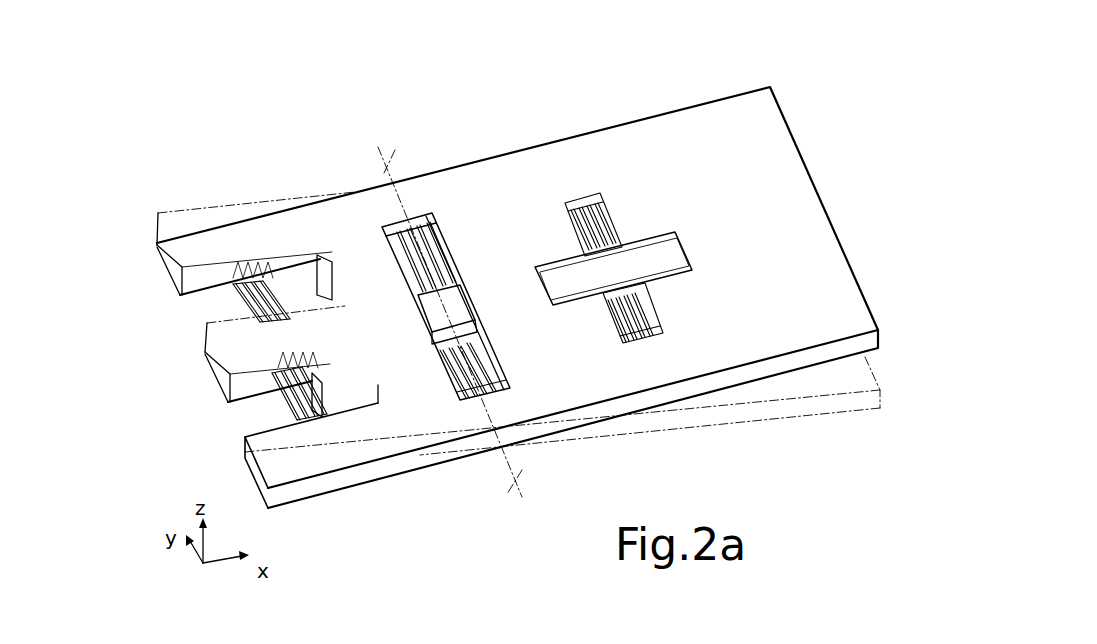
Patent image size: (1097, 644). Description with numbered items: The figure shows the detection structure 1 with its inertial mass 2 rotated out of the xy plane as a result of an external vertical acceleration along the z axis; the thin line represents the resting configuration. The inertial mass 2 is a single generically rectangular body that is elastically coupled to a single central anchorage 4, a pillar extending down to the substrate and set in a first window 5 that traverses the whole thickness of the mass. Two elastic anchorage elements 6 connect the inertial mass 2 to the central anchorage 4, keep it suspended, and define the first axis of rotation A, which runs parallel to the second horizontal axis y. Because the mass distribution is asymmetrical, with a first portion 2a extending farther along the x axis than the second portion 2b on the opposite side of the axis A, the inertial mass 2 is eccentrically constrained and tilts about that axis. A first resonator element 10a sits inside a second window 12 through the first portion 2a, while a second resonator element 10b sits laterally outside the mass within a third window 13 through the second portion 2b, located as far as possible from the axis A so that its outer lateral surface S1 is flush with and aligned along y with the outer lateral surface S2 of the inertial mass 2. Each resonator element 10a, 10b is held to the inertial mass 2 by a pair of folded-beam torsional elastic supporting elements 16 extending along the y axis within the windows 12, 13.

The detection structure 1 is at (836, 128).
The inertial mass 2 is at (812, 247).
The first portion 2a is at (670, 128).
The second portion 2b is at (335, 215).
The central anchorage 4 is at (461, 308).
The first window 5 is at (452, 252).
The elastic anchorage elements 6 is at (440, 225).
The first resonator element 10a is at (622, 307).
The second resonator element 10b is at (246, 360).
The second window 12 is at (686, 272).
The third window 13 is at (350, 398).
The elastic supporting elements 16 is at (283, 272).
The outer lateral surface of the second resonator element S1 is at (225, 393).
The outer lateral surface of the inertial mass S2 is at (157, 250).
The first axis of rotation A is at (450, 318).